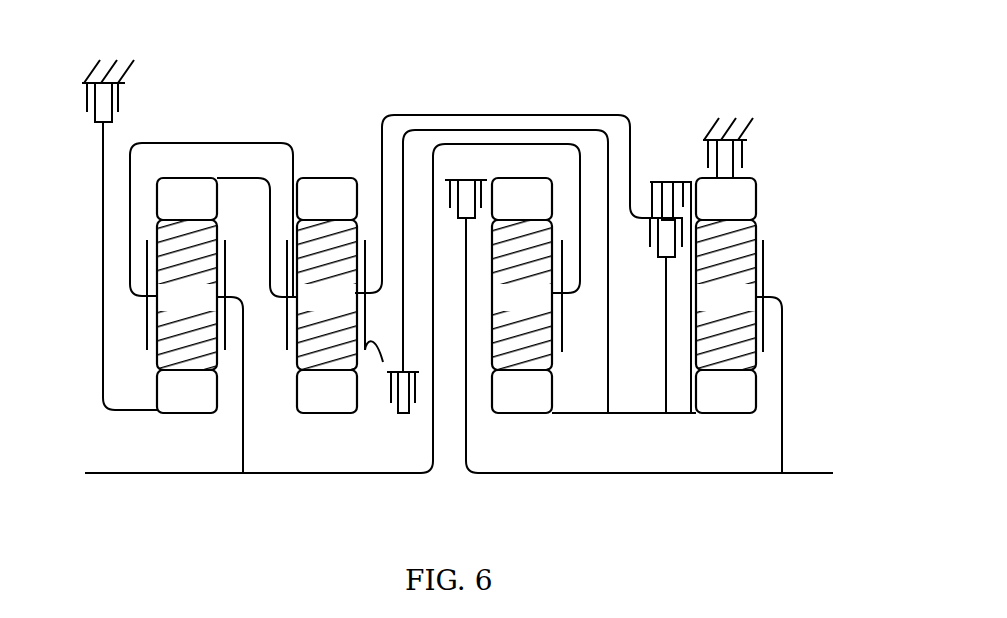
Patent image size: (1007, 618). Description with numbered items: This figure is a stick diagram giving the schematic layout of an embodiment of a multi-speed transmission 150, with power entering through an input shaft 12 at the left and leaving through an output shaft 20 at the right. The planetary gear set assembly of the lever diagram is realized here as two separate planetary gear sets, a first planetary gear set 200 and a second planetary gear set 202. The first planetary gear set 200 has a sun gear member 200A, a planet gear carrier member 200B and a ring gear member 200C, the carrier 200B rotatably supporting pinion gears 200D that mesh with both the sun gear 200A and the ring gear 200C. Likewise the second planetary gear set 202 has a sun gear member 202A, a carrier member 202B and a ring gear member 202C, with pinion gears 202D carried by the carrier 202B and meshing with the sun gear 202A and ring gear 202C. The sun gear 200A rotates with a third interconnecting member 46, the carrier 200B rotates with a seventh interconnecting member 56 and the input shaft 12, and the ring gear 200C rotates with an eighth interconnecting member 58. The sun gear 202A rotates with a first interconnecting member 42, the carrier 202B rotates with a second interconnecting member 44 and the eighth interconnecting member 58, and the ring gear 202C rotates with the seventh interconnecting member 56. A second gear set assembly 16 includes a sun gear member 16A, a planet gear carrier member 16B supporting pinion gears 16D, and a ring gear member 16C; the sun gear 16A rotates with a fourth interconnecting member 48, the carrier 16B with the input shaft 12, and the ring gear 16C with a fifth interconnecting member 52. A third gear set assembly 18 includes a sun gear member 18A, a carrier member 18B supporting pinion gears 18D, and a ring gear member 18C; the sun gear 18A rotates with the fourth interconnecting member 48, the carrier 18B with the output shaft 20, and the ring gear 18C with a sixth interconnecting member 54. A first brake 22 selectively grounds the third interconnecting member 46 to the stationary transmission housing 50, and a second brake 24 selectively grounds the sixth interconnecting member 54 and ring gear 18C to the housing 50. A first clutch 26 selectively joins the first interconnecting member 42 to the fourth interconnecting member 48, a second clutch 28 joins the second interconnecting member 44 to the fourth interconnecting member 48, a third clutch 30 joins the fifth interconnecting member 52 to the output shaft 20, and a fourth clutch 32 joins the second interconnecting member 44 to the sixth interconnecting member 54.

The multi-speed transmission 150 is at (451, 287).
The input shaft 12 is at (102, 478).
The output shaft 20 is at (812, 477).
The second gear set assembly 16 is at (550, 355).
The sun gear member 16A is at (498, 403).
The planet gear carrier member 16B is at (563, 347).
The ring gear member 16C is at (498, 210).
The pinion gears 16D is at (498, 306).
The third gear set assembly 18 is at (765, 355).
The sun gear member 18A is at (702, 403).
The planet gear carrier member 18B is at (766, 270).
The ring gear member 18C is at (702, 210).
The pinion gears 18D is at (702, 306).
The first planetary gear set 200 is at (154, 355).
The sun gear member 200A is at (163, 403).
The planet gear carrier member 200B is at (147, 337).
The ring gear member 200C is at (163, 210).
The pinion gears 200D is at (163, 306).
The second planetary gear set 202 is at (343, 355).
The sun gear member 202A is at (303, 403).
The planet gear carrier member 202B is at (383, 362).
The ring gear member 202C is at (303, 210).
The pinion gears 202D is at (303, 306).
The first brake 22 is at (120, 106).
The second brake 24 is at (745, 155).
The first clutch 26 is at (418, 388).
The second clutch 28 is at (650, 233).
The third clutch 30 is at (448, 192).
The fourth clutch 32 is at (650, 190).
The first interconnecting member 42 is at (367, 410).
The second interconnecting member 44 is at (589, 114).
The third interconnecting member 46 is at (102, 244).
The fourth interconnecting member 48 is at (588, 414).
The transmission housing 50 is at (127, 72).
The fifth interconnecting member 52 is at (488, 180).
The sixth interconnecting member 54 is at (689, 181).
The seventh interconnecting member 56 is at (260, 143).
The eighth interconnecting member 58 is at (233, 178).